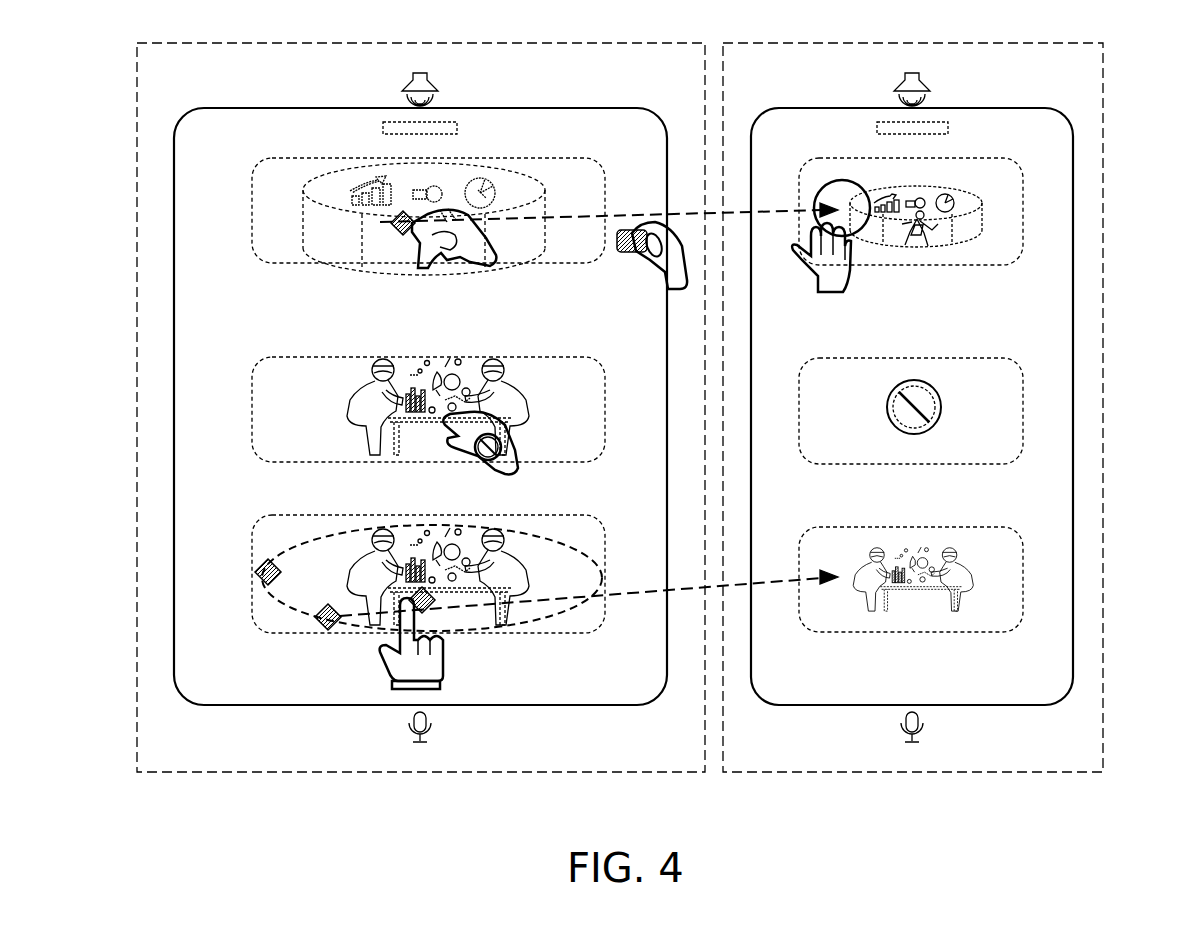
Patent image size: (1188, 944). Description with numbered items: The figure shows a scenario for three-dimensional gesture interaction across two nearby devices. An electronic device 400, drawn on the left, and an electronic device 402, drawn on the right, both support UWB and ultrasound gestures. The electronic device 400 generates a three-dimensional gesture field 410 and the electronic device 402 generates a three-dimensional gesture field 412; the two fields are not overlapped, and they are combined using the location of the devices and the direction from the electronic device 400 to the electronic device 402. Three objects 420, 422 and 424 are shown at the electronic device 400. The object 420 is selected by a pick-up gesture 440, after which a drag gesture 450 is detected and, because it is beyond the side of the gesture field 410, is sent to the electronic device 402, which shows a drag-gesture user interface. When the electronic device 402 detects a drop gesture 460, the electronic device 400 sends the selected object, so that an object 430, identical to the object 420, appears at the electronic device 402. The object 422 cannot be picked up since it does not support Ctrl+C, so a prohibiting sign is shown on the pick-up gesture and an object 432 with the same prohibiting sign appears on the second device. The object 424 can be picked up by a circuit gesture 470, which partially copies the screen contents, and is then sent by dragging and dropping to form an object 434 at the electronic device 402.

The electronic device 400 is at (174, 410).
The electronic device 402 is at (1073, 405).
The 3D gesture field 410 is at (137, 578).
The 3D gesture field 412 is at (1104, 575).
The object 420 is at (562, 158).
The object 422 is at (562, 357).
The object 424 is at (562, 515).
The object 430 is at (980, 158).
The object 432 is at (980, 358).
The object 434 is at (980, 527).
The pick-up gesture 440 is at (465, 267).
The drag gesture 450 is at (650, 272).
The drop gesture 460 is at (845, 283).
The circuit gesture 470 is at (445, 659).